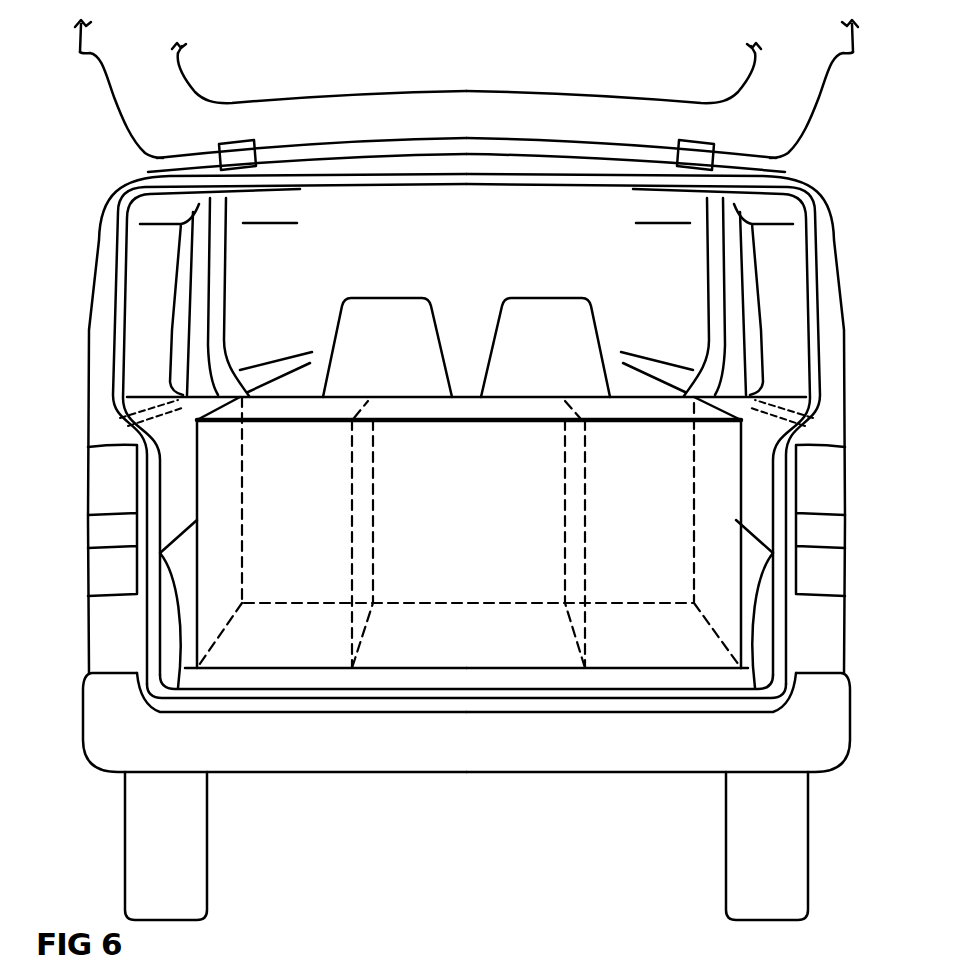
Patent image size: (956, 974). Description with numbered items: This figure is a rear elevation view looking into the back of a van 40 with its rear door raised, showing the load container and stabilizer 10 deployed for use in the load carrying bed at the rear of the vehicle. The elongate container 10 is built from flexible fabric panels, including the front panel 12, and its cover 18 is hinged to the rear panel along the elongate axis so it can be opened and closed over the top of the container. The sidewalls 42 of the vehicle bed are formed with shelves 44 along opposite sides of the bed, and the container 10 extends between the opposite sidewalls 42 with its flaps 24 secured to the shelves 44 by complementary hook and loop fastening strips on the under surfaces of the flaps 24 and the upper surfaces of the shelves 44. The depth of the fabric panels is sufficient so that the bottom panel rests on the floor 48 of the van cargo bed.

The load container and stabilizer 10 is at (465, 360).
The front panel 12 is at (298, 544).
The cover 18 is at (418, 407).
The flaps 24 is at (147, 421).
The van 40 is at (832, 200).
The sidewalls 42 is at (154, 374).
The shelves 44 is at (277, 337).
The floor 48 is at (478, 682).